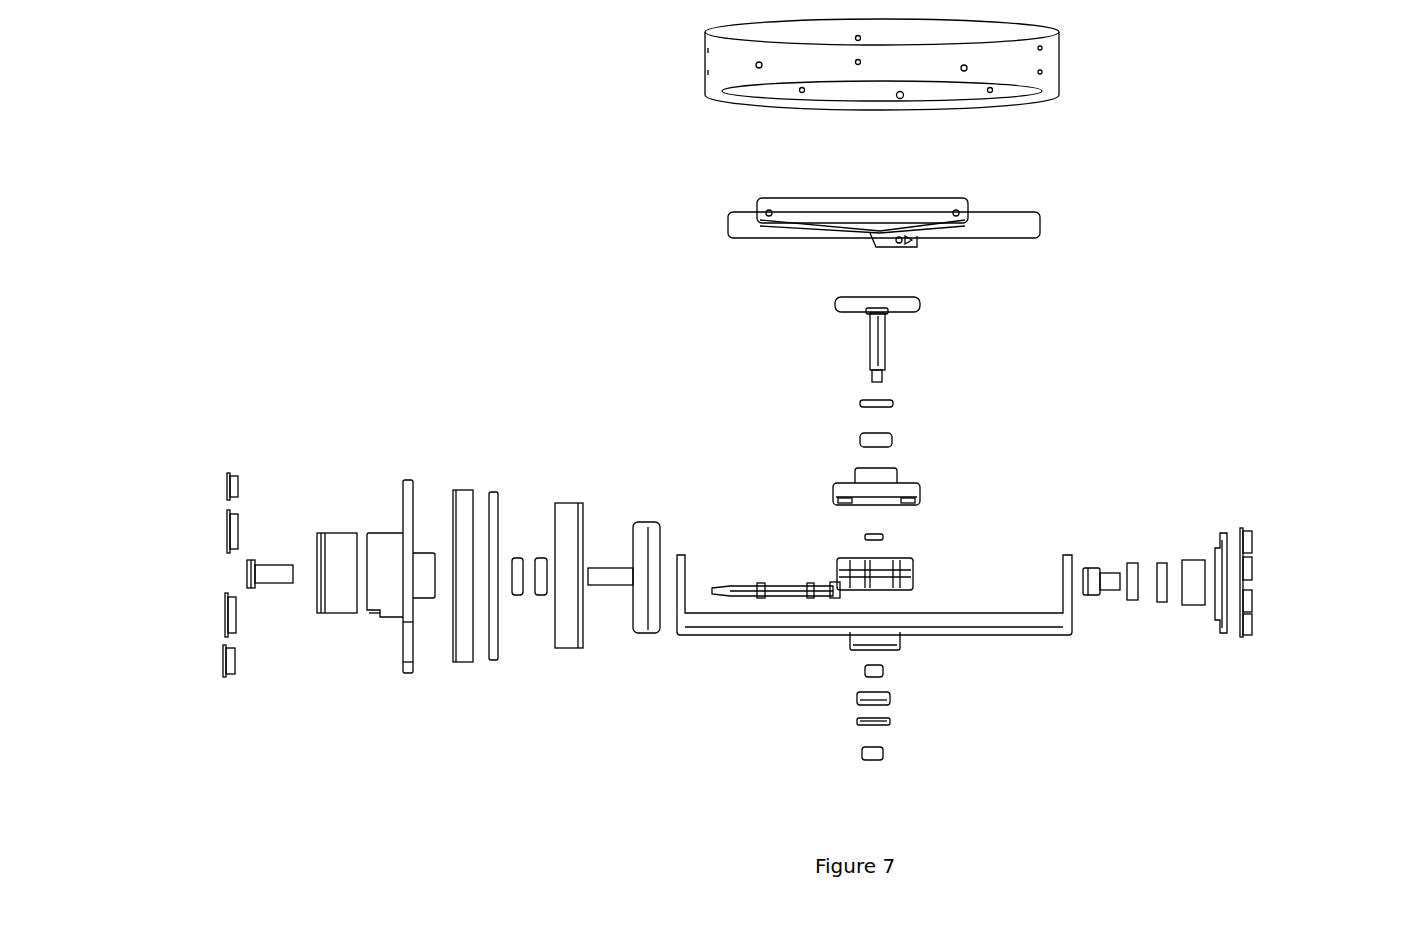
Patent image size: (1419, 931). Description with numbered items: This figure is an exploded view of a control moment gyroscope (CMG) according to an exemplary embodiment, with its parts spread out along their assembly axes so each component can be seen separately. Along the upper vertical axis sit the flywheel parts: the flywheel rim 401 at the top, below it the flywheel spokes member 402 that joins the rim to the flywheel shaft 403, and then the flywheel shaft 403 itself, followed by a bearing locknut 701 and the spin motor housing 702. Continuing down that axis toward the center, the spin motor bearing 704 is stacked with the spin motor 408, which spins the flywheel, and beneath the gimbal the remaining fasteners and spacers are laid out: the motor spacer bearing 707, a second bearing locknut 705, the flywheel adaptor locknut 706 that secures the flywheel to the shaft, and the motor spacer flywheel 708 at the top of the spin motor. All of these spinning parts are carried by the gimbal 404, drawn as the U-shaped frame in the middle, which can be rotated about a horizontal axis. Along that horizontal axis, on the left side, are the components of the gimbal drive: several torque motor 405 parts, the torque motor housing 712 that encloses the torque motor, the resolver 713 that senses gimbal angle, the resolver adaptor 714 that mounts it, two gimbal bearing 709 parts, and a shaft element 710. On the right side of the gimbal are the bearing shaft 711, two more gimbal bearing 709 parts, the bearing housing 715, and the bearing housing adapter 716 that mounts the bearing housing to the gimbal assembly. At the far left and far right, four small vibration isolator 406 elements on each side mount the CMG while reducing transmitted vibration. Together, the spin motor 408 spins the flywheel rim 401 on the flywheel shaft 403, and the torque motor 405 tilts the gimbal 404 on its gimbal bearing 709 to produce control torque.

The flywheel rim 401 is at (1000, 105).
The flywheel spokes member 402 is at (968, 208).
The flywheel shaft 403 is at (880, 367).
The gimbal 404 is at (967, 622).
The torque motor 405 is at (468, 660).
The vibration isolator 406 is at (225, 491).
The spin motor 408 is at (883, 588).
The bearing locknut 701 is at (894, 404).
The spin motor housing 702 is at (872, 447).
The spin motor bearing 704 is at (859, 505).
The bearing locknut 705 is at (868, 725).
The flywheel adaptor locknut 706 is at (878, 760).
The motor spacer bearing 707 is at (885, 675).
The motor spacer flywheel 708 is at (877, 540).
The gimbal bearing 709 is at (540, 595).
The shaft with head 710 is at (650, 527).
The bearing shaft 711 is at (1090, 595).
The torque motor housing 712 is at (412, 481).
The resolver 713 is at (357, 538).
The resolver adaptor 714 is at (264, 585).
The bearing housing 715 is at (1185, 563).
The bearing housing adapter 716 is at (1220, 580).